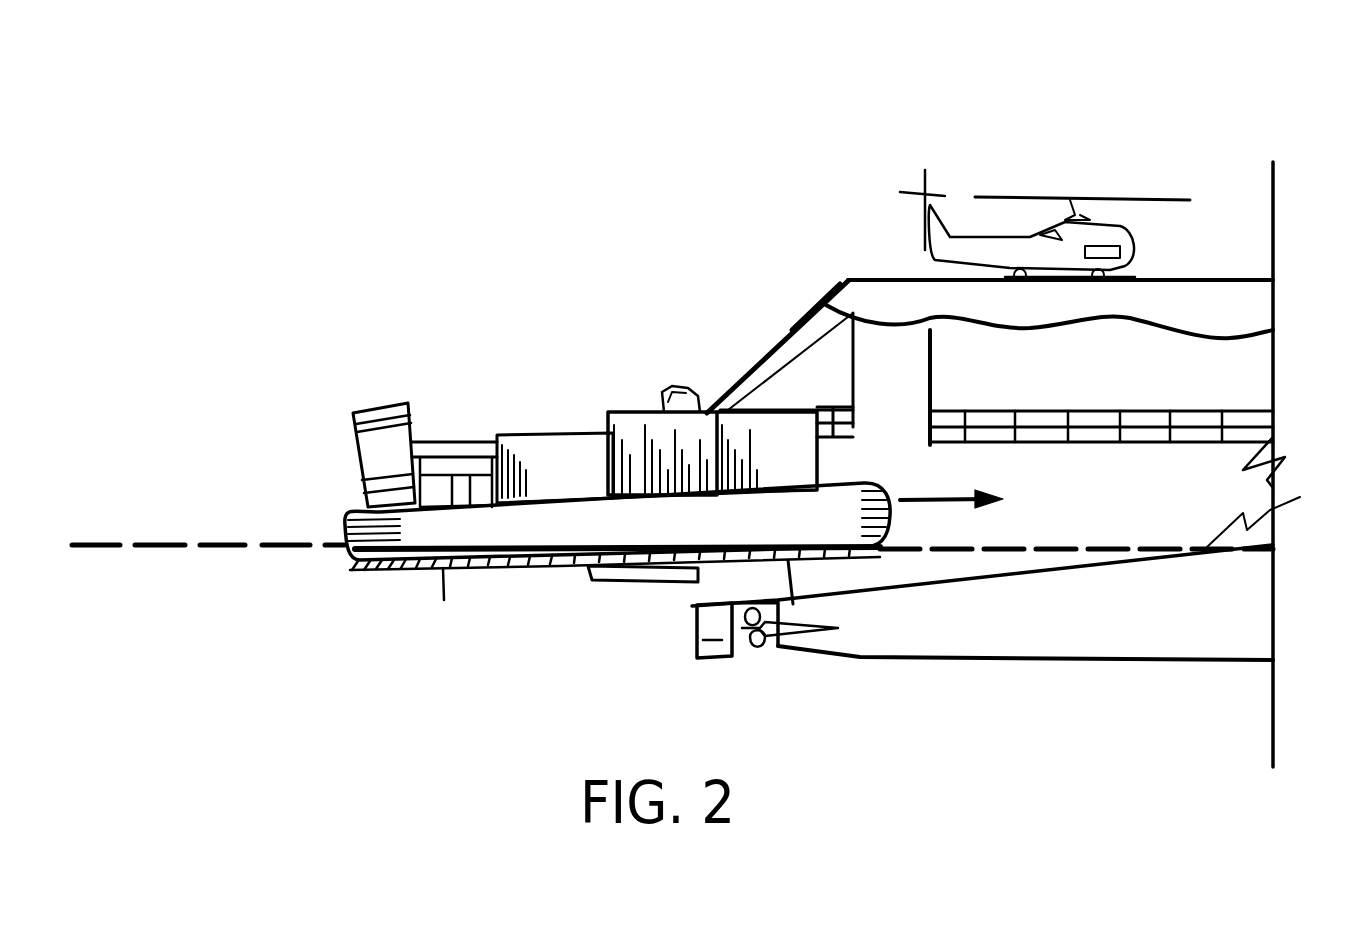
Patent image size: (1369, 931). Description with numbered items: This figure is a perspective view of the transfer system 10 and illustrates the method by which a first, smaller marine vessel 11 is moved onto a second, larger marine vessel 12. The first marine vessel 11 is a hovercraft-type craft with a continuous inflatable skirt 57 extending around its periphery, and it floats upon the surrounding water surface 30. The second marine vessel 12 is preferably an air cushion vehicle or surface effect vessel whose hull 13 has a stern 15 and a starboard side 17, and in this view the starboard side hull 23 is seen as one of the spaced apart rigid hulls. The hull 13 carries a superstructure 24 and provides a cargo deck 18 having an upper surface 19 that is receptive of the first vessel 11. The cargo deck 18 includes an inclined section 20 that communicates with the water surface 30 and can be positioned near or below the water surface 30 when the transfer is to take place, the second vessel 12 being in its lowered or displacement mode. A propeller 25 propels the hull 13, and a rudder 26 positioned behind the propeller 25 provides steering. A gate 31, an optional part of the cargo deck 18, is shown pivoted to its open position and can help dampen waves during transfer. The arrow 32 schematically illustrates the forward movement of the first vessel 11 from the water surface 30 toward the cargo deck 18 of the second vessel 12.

The transfer system 10 is at (812, 112).
The first marine vessel 11 is at (568, 428).
The second marine vessel 12 is at (1198, 280).
The hull 13 is at (1258, 620).
The stern 15 is at (820, 658).
The starboard side 17 is at (1160, 622).
The cargo deck 18 is at (1144, 479).
The upper surface 19 is at (1060, 540).
The inclined section 20 is at (782, 565).
The starboard side hull 23 is at (1013, 637).
The superstructure 24 is at (860, 278).
The propeller 25 is at (760, 658).
The rudder 26 is at (695, 650).
The water surface 30 is at (122, 533).
The gate 31 is at (598, 585).
The arrow 32 is at (947, 492).
The inflatable skirt 57 is at (444, 600).